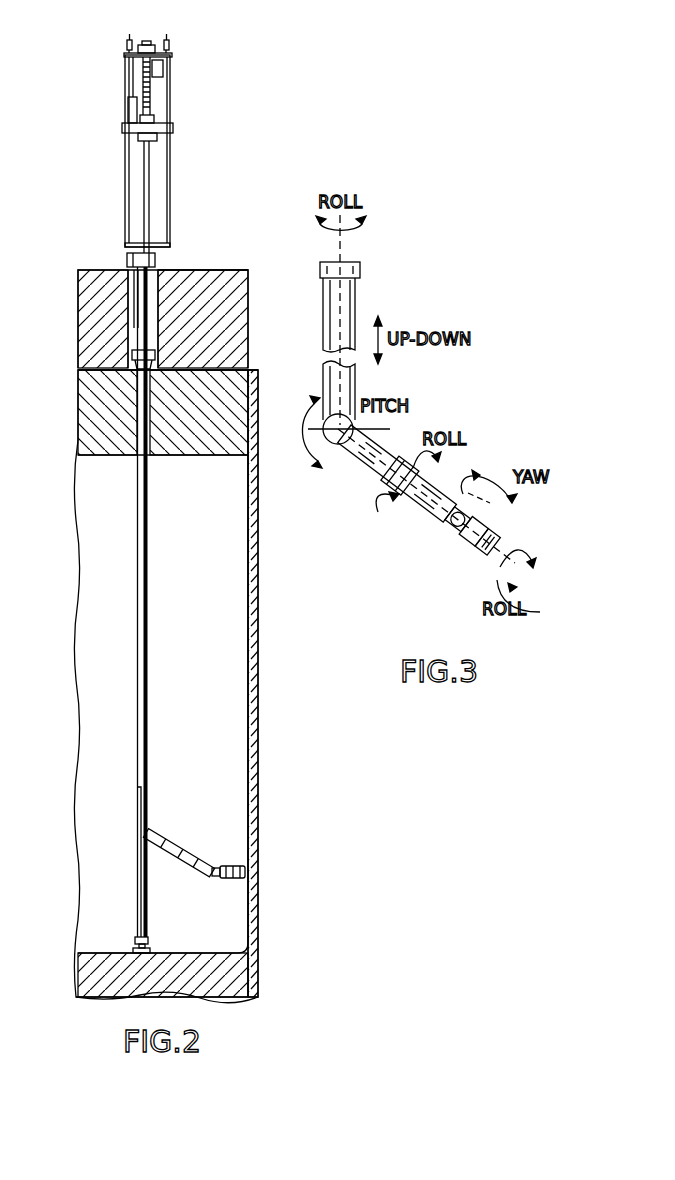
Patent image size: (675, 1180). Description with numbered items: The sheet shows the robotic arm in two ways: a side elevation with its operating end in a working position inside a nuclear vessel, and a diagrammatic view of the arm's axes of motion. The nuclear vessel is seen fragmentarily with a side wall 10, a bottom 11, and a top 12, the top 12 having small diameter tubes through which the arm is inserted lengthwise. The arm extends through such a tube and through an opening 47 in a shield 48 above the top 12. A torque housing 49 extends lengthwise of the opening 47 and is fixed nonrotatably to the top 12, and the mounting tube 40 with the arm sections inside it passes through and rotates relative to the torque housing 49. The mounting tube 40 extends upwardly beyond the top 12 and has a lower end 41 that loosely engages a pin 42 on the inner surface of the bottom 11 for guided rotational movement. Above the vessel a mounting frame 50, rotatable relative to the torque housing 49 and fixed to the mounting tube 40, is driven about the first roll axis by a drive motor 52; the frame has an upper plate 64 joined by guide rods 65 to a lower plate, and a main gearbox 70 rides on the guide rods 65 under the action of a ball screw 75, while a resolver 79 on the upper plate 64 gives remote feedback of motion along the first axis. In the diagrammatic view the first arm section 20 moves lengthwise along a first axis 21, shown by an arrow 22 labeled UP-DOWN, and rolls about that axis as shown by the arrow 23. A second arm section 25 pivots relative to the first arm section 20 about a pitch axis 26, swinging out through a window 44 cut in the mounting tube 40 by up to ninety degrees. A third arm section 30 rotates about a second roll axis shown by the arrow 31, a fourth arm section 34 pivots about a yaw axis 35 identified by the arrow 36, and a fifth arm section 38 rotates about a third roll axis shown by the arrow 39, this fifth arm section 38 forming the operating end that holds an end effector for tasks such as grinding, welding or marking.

In FIG. 2, the side wall 10 is at (258, 776).
In FIG. 2, the bottom 11 is at (230, 975).
In FIG. 2, the top 12 is at (78, 445).
In FIG. 2, the first arm section 20 is at (150, 212).
In FIG. 3, the first arm section 20 is at (348, 312).
In FIG. 3, the first axis 21 is at (333, 300).
In FIG. 3, the arrow 22 is at (385, 325).
In FIG. 3, the arrow 23 is at (362, 234).
In FIG. 2, the second arm section 25 is at (162, 843).
In FIG. 3, the second arm section 25 is at (392, 440).
In FIG. 3, the pitch axis 26 is at (330, 442).
In FIG. 3, the third arm section 30 is at (448, 525).
In FIG. 3, the arrow 31 is at (386, 505).
In FIG. 3, the fourth arm section 34 is at (470, 535).
In FIG. 2, the yaw axis 35 is at (213, 877).
In FIG. 3, the yaw axis 35 is at (484, 524).
In FIG. 3, the arrow 36 is at (462, 470).
In FIG. 2, the fifth arm section 38 is at (236, 880).
In FIG. 3, the fifth arm section 38 is at (512, 548).
In FIG. 3, the arrow 39 is at (532, 598).
In FIG. 2, the mounting tube 40 is at (129, 705).
In FIG. 2, the lower end 41 is at (135, 940).
In FIG. 2, the pin 42 is at (148, 950).
In FIG. 2, the window 44 is at (140, 800).
In FIG. 2, the opening 47 is at (185, 278).
In FIG. 2, the shield 48 is at (78, 325).
In FIG. 2, the torque housing 49 is at (130, 272).
In FIG. 2, the mounting frame 50 is at (124, 126).
In FIG. 2, the drive motor 52 is at (127, 258).
In FIG. 2, the upper plate 64 is at (172, 55).
In FIG. 2, the guide rods 65 is at (170, 172).
In FIG. 2, the main gearbox 70 is at (174, 127).
In FIG. 2, the ball screw 75 is at (150, 97).
In FIG. 2, the resolver 79 is at (149, 41).